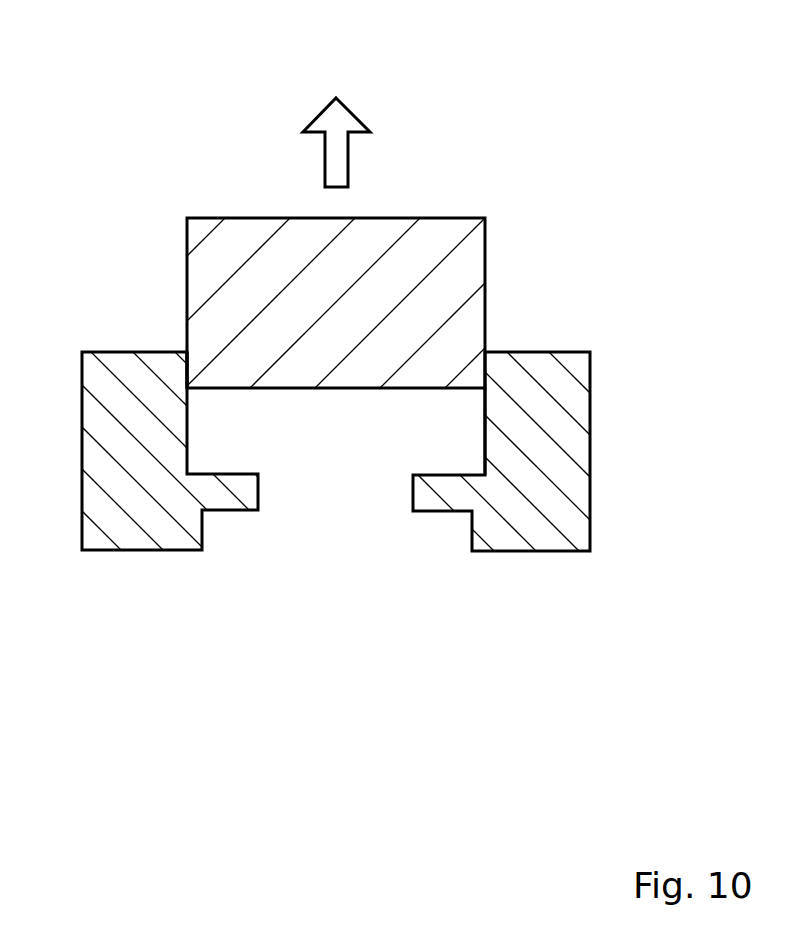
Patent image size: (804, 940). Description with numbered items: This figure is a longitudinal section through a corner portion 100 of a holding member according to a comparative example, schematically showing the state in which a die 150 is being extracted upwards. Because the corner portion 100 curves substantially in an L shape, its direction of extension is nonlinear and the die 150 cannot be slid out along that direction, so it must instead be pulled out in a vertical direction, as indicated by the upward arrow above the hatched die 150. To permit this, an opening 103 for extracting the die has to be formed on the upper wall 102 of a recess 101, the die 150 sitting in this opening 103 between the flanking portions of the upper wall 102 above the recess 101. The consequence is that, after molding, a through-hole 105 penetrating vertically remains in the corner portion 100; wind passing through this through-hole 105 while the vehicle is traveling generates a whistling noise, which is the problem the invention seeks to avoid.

The corner portion 100 is at (565, 352).
The recess 101 is at (427, 407).
The upper wall 102 is at (108, 352).
The opening 103 is at (188, 380).
The through-hole 105 is at (337, 493).
The die 150 is at (440, 232).